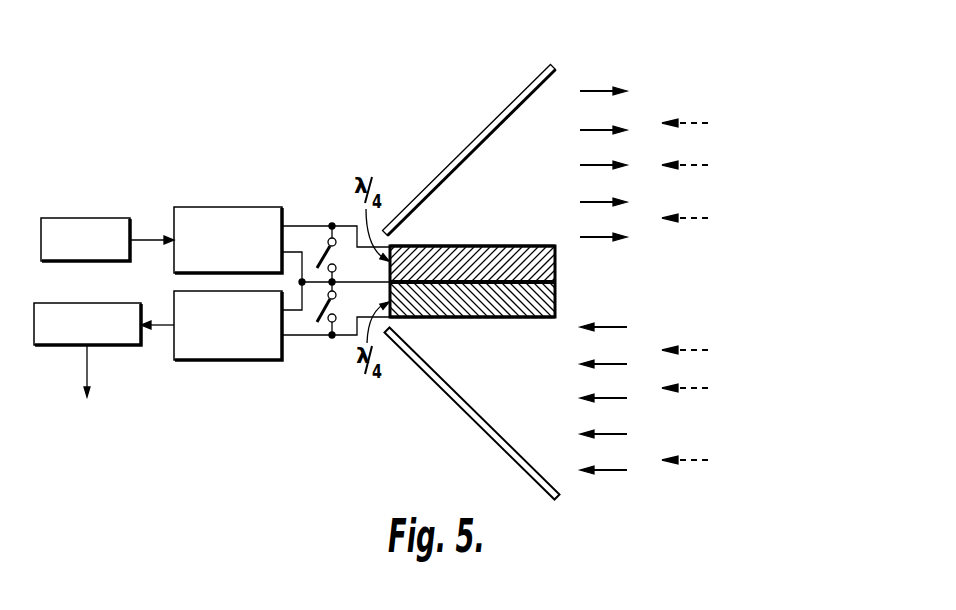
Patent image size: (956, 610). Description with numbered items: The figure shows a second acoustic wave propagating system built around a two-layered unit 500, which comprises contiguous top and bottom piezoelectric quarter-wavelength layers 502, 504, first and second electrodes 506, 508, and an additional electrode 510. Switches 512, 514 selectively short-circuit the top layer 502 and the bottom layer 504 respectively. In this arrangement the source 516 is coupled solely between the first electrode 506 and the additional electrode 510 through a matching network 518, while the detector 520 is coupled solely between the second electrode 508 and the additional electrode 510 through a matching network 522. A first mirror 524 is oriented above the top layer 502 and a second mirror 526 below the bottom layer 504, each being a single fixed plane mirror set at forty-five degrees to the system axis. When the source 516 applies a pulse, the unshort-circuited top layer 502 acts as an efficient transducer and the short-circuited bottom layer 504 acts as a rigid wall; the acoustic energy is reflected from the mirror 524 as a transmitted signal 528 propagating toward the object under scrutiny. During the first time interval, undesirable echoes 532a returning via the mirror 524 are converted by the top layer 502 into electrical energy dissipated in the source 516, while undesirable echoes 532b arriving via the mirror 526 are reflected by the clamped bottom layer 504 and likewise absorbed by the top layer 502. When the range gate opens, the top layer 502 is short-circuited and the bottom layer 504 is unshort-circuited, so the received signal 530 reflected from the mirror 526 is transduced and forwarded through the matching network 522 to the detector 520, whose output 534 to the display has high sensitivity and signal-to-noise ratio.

The two-layered unit 500 is at (472, 267).
The top piezoelectric quarter-wavelength layer 502 is at (482, 246).
The bottom piezoelectric quarter-wavelength layer 504 is at (471, 318).
The first electrode 506 is at (461, 246).
The second electrode 508 is at (413, 318).
The additional electrode 510 is at (537, 288).
The switch 512 is at (327, 248).
The switch 514 is at (327, 307).
The source 516 is at (97, 200).
The matching network 518 is at (233, 191).
The detector 520 is at (86, 303).
The matching network 522 is at (221, 361).
The first mirror 524 is at (453, 149).
The second mirror 526 is at (456, 412).
The transmitted signal 528 is at (594, 36).
The received signal 530 is at (612, 278).
The undesirable echoes 532a is at (694, 76).
The undesirable echoes 532b is at (696, 330).
The output 534 is at (88, 364).